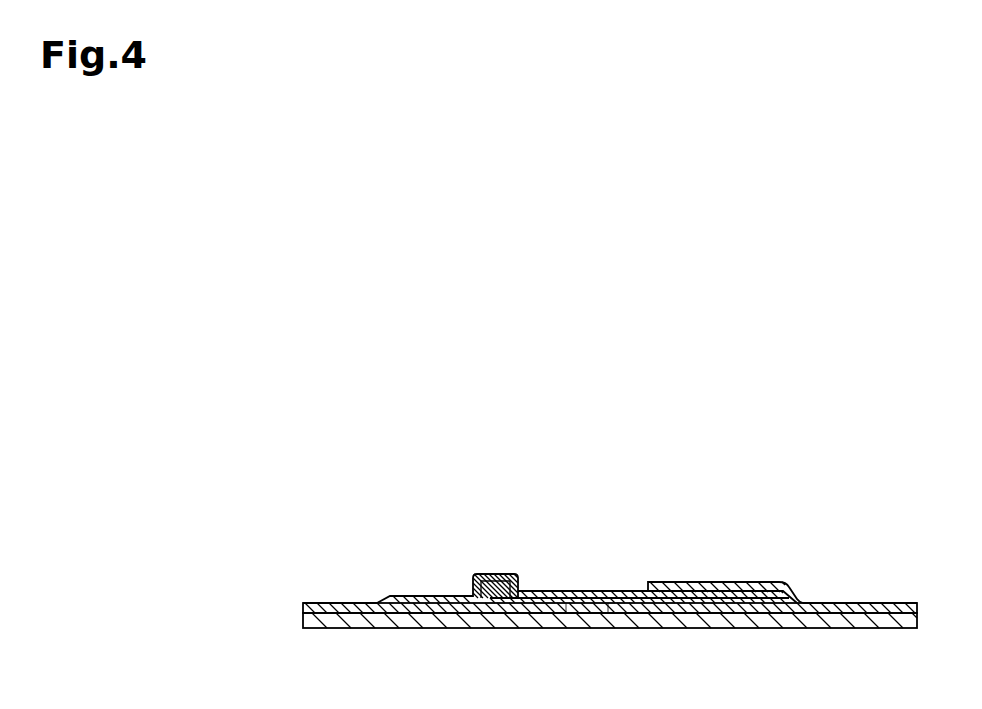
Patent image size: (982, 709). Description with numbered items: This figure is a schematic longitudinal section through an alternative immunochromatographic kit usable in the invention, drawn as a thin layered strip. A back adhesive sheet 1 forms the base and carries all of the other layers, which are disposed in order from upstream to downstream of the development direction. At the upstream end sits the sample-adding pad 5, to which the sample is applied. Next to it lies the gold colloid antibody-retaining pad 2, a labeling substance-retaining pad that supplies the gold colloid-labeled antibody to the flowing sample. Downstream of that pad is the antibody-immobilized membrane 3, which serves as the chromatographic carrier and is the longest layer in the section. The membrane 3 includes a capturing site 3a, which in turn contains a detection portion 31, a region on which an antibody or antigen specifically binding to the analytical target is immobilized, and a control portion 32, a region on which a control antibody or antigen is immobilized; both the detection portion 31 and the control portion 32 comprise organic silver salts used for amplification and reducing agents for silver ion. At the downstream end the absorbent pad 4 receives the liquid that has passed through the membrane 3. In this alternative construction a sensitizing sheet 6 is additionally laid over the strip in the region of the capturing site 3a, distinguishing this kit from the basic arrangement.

The back adhesive sheet 1 is at (640, 627).
The gold colloid antibody-retaining pad 2 is at (444, 614).
The antibody-immobilized membrane 3 is at (692, 612).
The capturing site 3a is at (566, 636).
The detection portion 31 is at (558, 592).
The control portion 32 is at (611, 592).
The absorbent pad 4 is at (852, 603).
The sample-adding pad 5 is at (358, 602).
The sensitizing sheet 6 is at (637, 597).